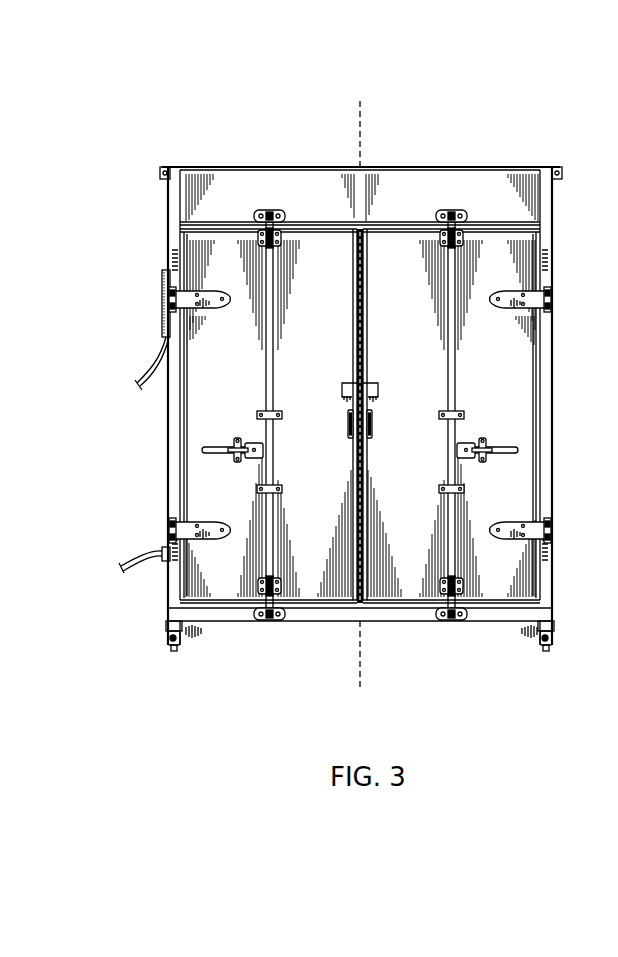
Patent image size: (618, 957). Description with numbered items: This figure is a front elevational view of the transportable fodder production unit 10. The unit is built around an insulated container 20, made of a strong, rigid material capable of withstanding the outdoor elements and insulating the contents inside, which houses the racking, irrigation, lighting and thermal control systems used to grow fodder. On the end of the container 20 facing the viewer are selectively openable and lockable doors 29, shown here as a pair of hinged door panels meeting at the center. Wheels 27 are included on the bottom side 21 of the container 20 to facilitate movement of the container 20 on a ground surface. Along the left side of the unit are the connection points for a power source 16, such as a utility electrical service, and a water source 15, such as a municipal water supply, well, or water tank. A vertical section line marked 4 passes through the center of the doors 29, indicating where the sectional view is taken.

The transportable fodder production unit 10 is at (112, 86).
The section line 4- 4 is at (363, 101).
The insulated container 20 is at (553, 264).
The doors 29 is at (512, 413).
The bottom side 21 is at (493, 616).
The wheels 27 is at (553, 637).
The power source 16 is at (130, 386).
The water source 15 is at (118, 570).